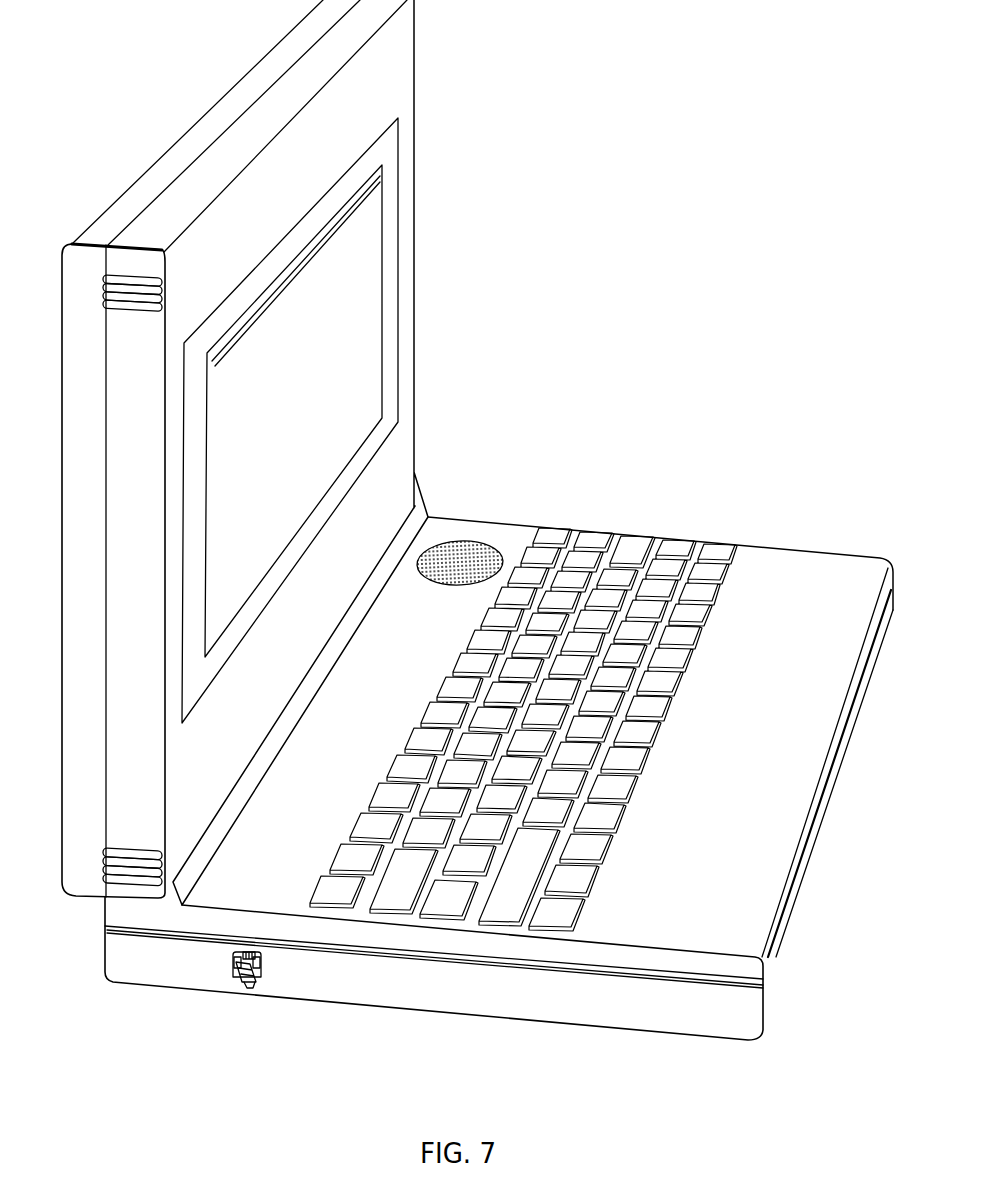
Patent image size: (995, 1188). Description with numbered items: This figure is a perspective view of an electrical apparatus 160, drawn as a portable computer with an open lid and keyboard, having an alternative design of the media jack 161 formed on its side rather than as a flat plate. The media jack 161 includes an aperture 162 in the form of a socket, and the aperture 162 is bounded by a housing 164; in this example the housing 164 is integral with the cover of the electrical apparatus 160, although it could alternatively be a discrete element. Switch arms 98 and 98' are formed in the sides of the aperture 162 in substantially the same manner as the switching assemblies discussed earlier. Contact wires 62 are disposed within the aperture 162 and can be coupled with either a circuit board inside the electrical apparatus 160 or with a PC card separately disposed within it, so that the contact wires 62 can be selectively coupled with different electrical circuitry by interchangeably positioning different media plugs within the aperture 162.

The electrical apparatus 160 is at (573, 440).
The media jack 161 is at (268, 982).
The contact wires 62 is at (246, 950).
The switch arm 98 is at (291, 969).
The switch arm 98' is at (196, 956).
The aperture 162 is at (233, 967).
The housing 164 is at (247, 990).